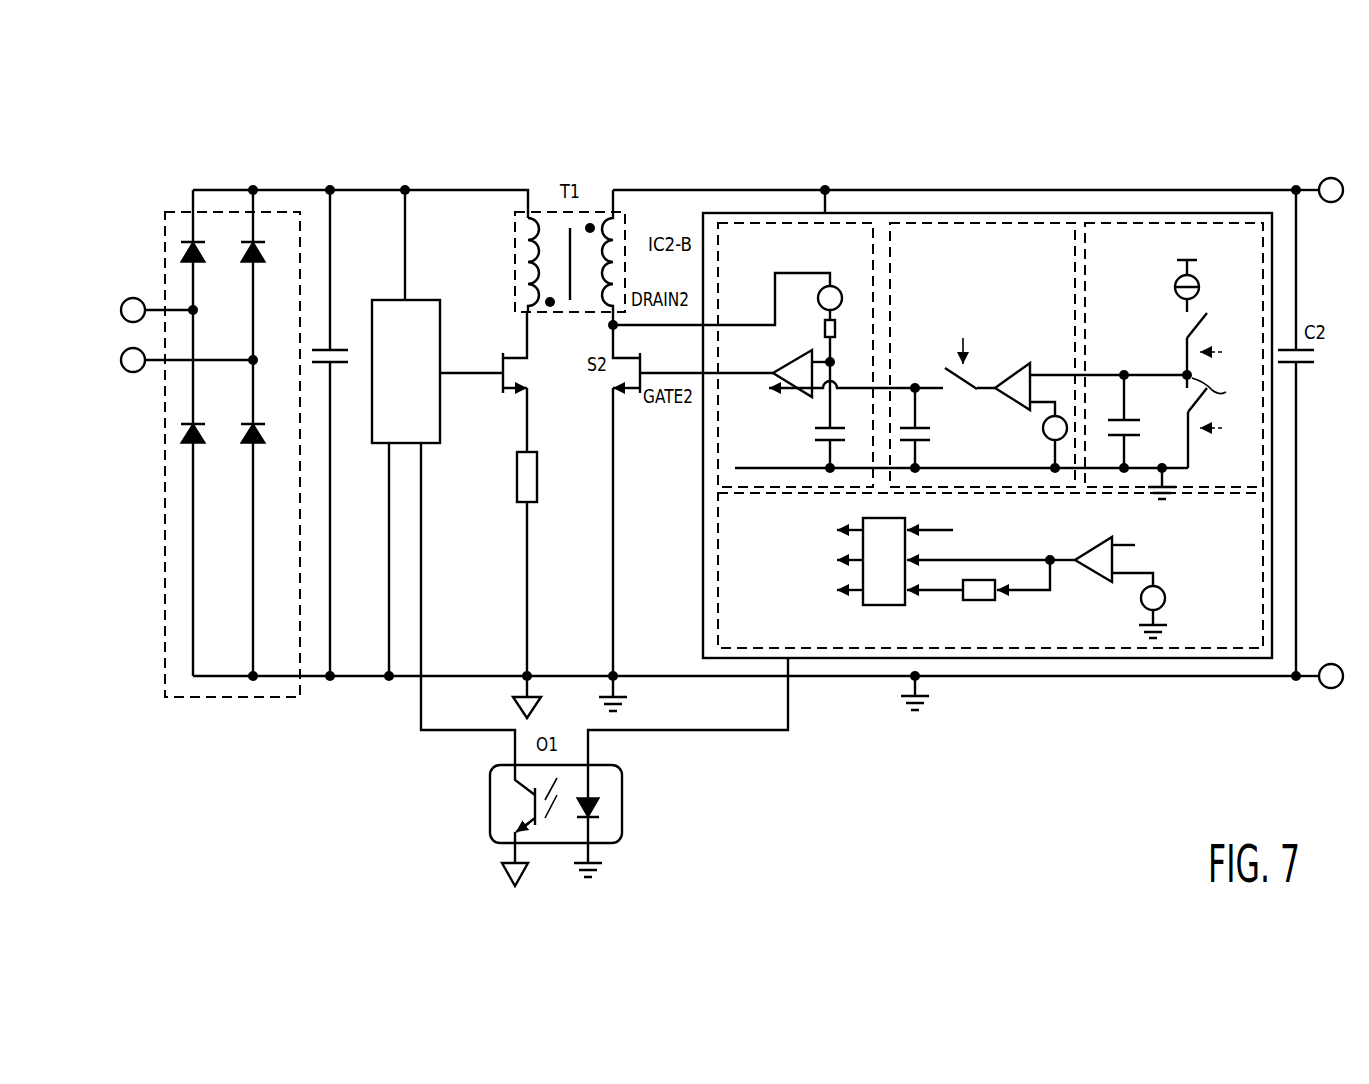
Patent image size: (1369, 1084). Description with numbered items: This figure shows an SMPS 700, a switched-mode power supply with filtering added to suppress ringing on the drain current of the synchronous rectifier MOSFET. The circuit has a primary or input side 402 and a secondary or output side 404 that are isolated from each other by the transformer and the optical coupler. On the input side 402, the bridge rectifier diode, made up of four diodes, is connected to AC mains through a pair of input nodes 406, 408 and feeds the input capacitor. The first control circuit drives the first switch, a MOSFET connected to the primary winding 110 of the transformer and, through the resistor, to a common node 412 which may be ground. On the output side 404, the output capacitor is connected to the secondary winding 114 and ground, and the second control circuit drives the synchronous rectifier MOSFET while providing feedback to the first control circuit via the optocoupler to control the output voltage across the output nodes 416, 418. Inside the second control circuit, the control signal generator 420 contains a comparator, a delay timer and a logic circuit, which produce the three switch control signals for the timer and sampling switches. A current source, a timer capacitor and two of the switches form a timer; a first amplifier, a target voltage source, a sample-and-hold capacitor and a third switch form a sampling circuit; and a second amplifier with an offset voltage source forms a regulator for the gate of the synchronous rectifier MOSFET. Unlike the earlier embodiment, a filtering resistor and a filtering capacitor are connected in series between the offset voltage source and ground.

The primary winding 110 is at (531, 214).
The secondary winding 114 is at (611, 214).
The primary or input side 402 is at (354, 163).
The secondary or output side 404 is at (1034, 163).
The input node 406 is at (133, 298).
The input node 408 is at (133, 372).
The common node 412 is at (513, 707).
The output node 416 is at (1331, 202).
The output node 418 is at (1325, 687).
The control signal generator 420 is at (1190, 526).
The SMPS 700 is at (1014, 768).